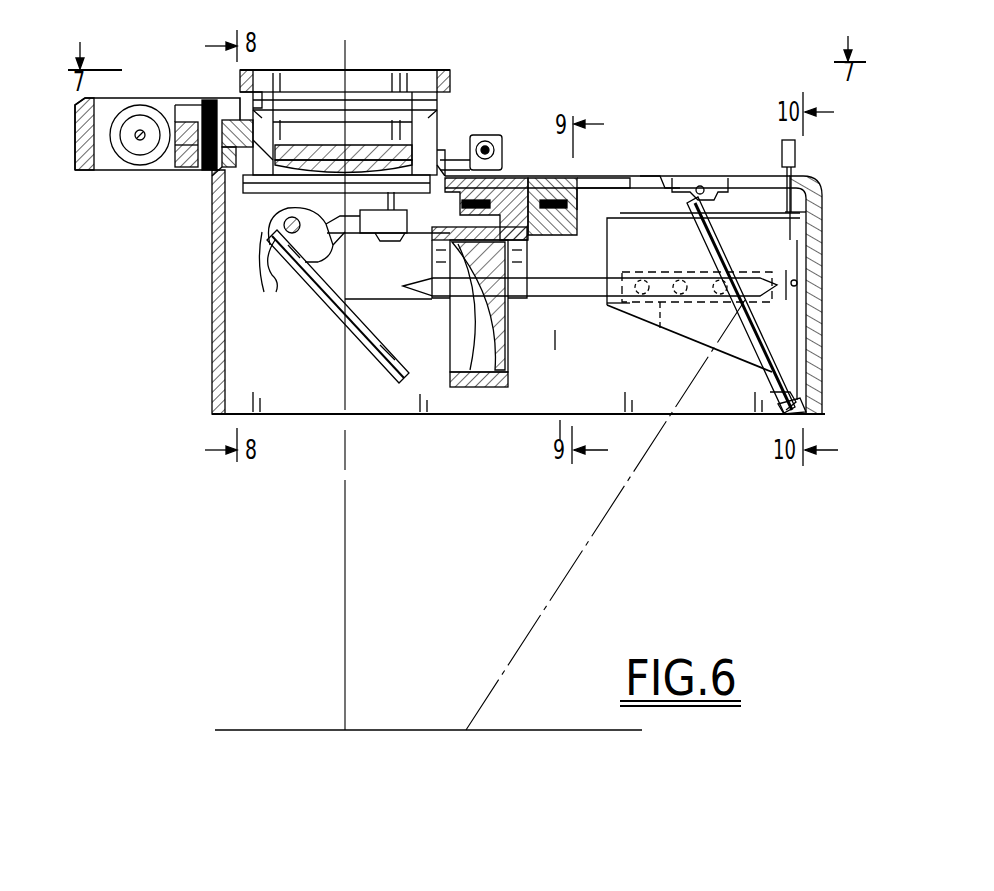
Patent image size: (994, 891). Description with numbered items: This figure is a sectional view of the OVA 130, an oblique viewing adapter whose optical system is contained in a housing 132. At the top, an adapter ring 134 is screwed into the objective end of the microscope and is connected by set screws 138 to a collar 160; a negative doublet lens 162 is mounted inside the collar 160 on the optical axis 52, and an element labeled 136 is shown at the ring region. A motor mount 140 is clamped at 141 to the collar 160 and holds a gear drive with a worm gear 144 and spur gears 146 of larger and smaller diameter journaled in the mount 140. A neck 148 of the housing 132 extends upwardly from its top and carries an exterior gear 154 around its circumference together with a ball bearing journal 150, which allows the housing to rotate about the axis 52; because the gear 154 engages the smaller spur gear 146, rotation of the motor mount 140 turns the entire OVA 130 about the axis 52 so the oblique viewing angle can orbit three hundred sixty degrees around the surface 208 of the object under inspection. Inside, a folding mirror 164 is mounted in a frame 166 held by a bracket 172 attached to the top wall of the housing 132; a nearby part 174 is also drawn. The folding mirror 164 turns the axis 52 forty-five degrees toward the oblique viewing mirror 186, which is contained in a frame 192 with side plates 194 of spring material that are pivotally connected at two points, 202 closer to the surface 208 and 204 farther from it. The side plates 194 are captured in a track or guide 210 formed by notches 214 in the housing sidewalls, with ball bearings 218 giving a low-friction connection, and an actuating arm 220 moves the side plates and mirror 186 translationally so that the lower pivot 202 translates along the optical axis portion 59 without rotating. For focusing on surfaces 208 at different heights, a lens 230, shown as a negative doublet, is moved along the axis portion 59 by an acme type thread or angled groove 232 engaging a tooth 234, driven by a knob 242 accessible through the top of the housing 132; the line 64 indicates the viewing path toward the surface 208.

The axis 52 is at (345, 492).
The optical axis portion 59 is at (564, 300).
The light path 64 is at (558, 580).
The OVA 130 is at (878, 276).
The housing 132 is at (816, 347).
The adapter ring 134 is at (449, 70).
The lens barrel 136 is at (442, 108).
The set screws 138 is at (240, 80).
The motor mount 140 is at (82, 170).
The clamp location 141 is at (492, 143).
The worm gear 144 is at (136, 165).
The spur gears 146 is at (192, 118).
The neck 148 is at (455, 160).
The ball bearing journal 150 is at (230, 180).
The exterior gear 154 is at (452, 168).
The collar 160 is at (283, 92).
The negative doublet lens 162 is at (360, 140).
The folding mirror 164 is at (335, 320).
The frame 166 is at (322, 272).
The bracket 172 is at (422, 240).
The spring 174 is at (283, 277).
The oblique viewing mirror 186 is at (768, 330).
The frame 192 is at (808, 404).
The side plates 194 is at (785, 246).
The pivotal connection point 202 is at (806, 396).
The pivotal connection point 204 is at (692, 190).
The surface 208 is at (386, 730).
The track or guide 210 is at (446, 300).
The notches 214 is at (556, 296).
The ball bearings 218 is at (660, 265).
The actuating arm 220 is at (797, 152).
The lens 230 is at (488, 388).
The acme type thread or angled groove 232 is at (502, 178).
The tooth 234 is at (558, 192).
The knob 242 is at (556, 212).